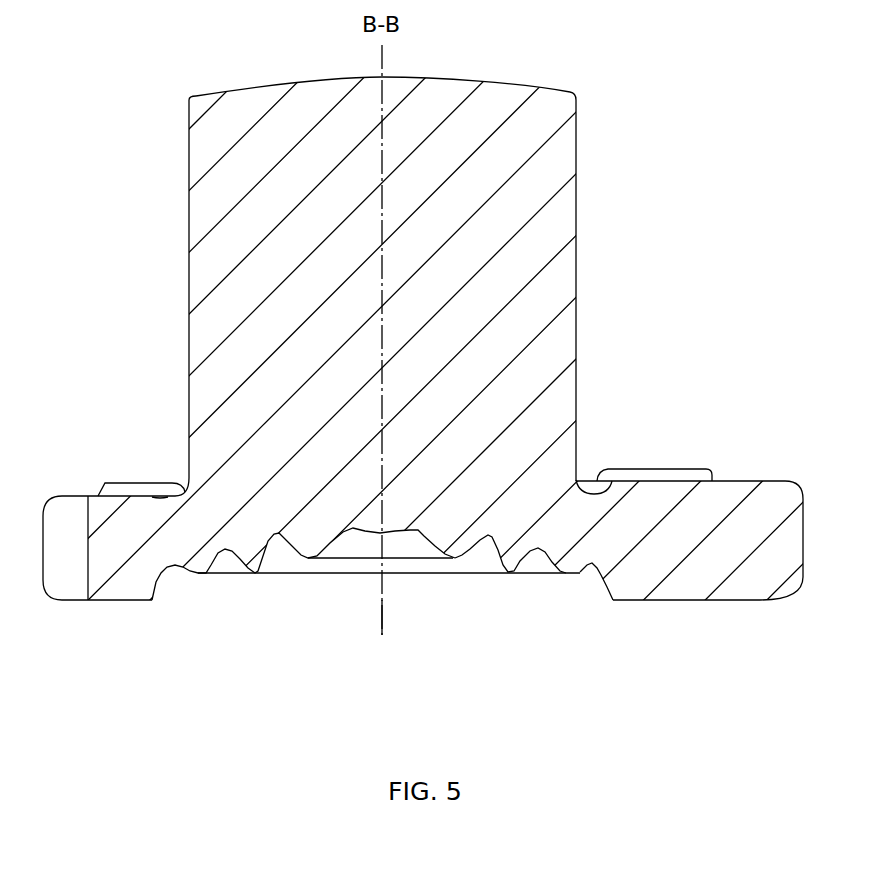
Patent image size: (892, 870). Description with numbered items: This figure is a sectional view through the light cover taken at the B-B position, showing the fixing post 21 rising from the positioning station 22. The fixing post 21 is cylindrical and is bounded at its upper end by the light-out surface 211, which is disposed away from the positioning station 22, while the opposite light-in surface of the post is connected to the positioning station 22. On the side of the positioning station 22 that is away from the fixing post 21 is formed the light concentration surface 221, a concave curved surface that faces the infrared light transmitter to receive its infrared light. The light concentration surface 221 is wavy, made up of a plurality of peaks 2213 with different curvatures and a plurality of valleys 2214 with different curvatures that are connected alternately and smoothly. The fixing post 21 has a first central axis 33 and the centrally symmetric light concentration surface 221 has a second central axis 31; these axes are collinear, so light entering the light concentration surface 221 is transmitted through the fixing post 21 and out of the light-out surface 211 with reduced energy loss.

The fixing post 21 is at (395, 270).
The light-out surface 211 is at (307, 85).
The positioning station 22 is at (423, 580).
The light concentration surface 221 is at (565, 670).
The peaks 2213 is at (443, 552).
The valleys 2214 is at (598, 570).
The second central axis 31 is at (380, 620).
The first central axis 33 is at (383, 260).